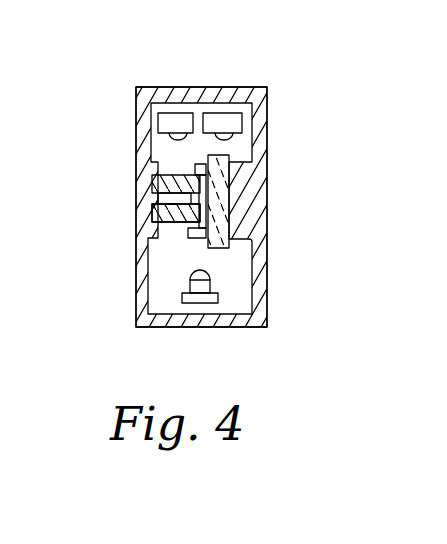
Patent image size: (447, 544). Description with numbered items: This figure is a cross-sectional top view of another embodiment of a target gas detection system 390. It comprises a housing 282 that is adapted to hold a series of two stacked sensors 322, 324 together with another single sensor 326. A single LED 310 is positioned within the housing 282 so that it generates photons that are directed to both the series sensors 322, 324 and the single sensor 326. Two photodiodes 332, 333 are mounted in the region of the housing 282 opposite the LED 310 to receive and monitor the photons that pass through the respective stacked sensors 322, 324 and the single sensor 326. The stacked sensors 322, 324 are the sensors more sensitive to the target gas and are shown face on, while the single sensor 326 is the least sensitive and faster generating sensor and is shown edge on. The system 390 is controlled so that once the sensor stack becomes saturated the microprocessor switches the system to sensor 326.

The target gas detection system 390 is at (119, 83).
The housing 282 is at (268, 198).
The LED 310 is at (195, 271).
The sensor 322 is at (181, 222).
The sensor 324 is at (182, 175).
The single sensor 326 is at (219, 249).
The photodiode 332 is at (165, 110).
The photodiode 333 is at (243, 122).